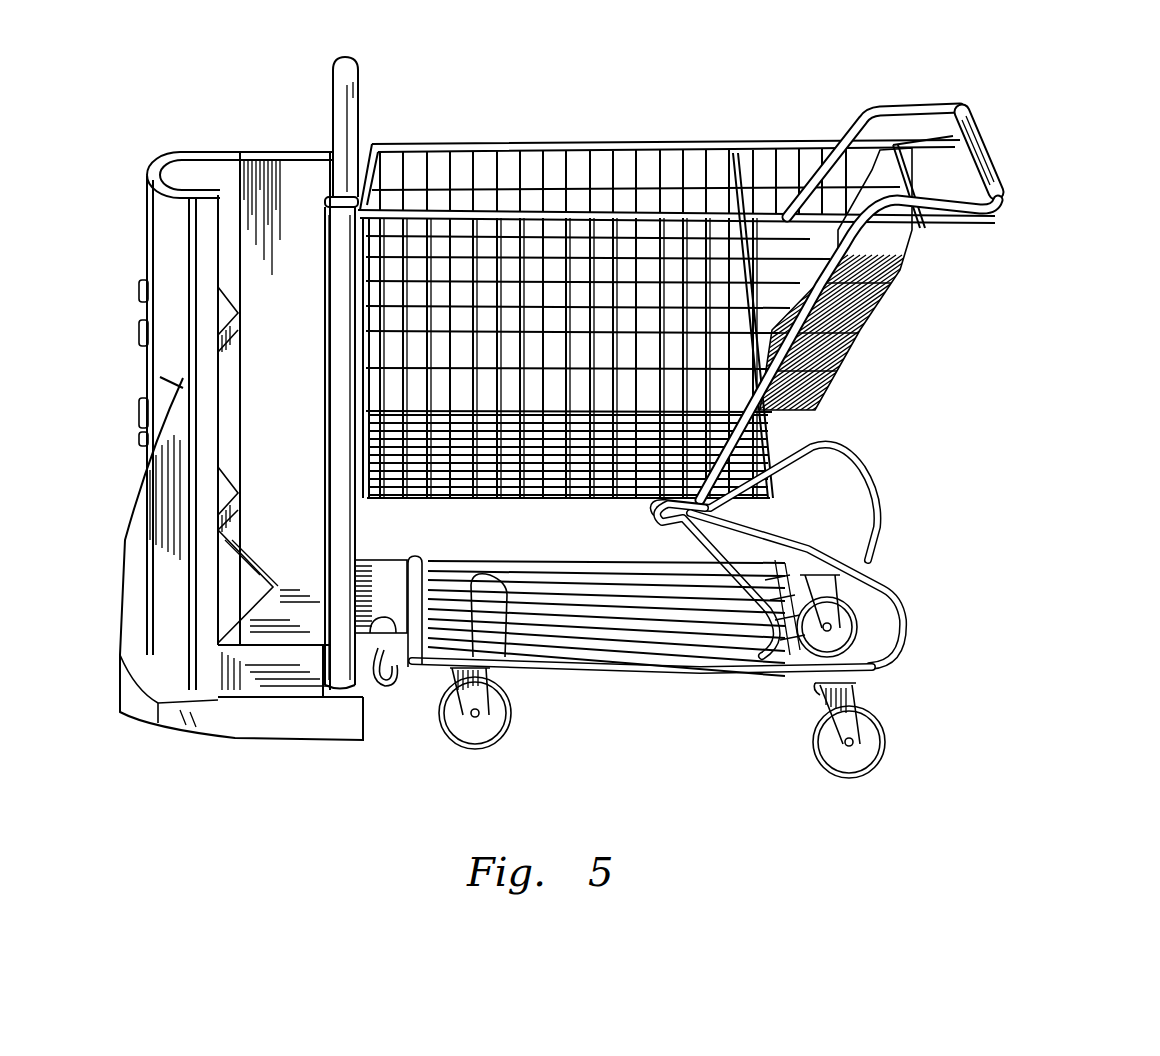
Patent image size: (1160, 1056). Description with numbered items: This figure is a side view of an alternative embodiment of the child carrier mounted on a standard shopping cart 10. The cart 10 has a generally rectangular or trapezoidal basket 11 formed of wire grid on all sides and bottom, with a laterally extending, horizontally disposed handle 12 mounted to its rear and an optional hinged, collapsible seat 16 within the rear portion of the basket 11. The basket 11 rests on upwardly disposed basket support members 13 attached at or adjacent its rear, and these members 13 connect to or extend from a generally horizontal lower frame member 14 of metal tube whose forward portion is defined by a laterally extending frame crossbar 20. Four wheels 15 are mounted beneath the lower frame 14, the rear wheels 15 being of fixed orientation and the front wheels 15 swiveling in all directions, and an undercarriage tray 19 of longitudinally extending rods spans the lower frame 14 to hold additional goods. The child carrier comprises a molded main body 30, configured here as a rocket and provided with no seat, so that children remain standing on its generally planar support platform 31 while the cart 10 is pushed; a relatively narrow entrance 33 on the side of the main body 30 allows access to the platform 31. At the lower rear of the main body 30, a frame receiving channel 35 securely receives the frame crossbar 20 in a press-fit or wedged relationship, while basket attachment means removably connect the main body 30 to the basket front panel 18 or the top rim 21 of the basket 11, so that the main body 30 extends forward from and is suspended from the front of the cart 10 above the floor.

The shopping cart 10 is at (722, 60).
The basket 11 is at (612, 143).
The handle 12 is at (985, 118).
The basket support members 13 is at (807, 537).
The lower frame member 14 is at (608, 680).
The wheels 15 is at (508, 745).
The seat 16 is at (843, 292).
The basket front panel 18 is at (367, 207).
The undercarriage tray 19 is at (672, 617).
The frame crossbar 20 is at (380, 660).
The top rim 21 is at (360, 195).
The main body 30 is at (177, 231).
The support platform 31 is at (290, 636).
The entrance 33 is at (290, 232).
The frame receiving channel 35 is at (385, 627).